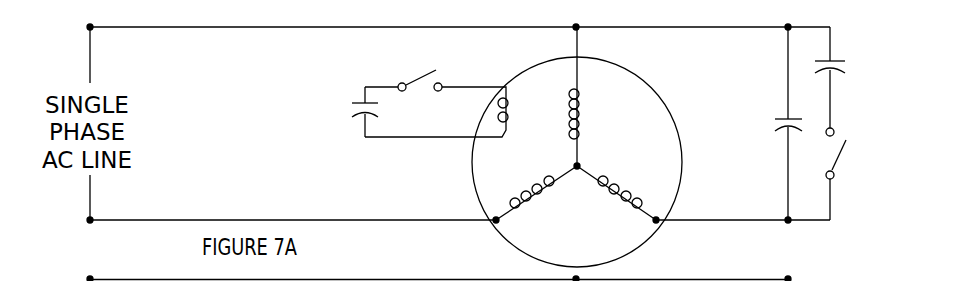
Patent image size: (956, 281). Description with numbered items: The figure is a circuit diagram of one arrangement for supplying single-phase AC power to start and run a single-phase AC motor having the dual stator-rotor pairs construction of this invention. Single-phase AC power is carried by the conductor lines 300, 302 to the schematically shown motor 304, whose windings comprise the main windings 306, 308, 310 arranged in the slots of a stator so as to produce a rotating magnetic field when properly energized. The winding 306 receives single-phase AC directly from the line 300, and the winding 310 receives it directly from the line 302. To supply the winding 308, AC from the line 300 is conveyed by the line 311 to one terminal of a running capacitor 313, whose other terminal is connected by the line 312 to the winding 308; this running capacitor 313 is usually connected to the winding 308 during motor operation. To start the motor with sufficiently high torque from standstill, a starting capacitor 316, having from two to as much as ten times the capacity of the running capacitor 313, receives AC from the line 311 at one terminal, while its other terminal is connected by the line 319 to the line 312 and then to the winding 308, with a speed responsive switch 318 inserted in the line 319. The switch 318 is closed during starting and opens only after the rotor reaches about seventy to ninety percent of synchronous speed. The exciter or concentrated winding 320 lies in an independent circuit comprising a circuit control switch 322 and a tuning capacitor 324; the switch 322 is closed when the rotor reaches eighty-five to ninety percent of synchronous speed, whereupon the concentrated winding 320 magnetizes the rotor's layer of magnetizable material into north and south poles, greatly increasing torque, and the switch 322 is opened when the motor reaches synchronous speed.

The conductor line 300 is at (282, 28).
The conductor line 302 is at (280, 220).
The motor 304 is at (652, 88).
The main winding 306 is at (598, 112).
The main winding 308 is at (630, 183).
The main winding 310 is at (540, 192).
The line 311 is at (754, 28).
The line 312 is at (775, 219).
The running capacitor 313 is at (775, 127).
The starting capacitor 316 is at (867, 52).
The speed responsive switch 318 is at (867, 138).
The line 319 is at (832, 190).
The concentrated winding 320 is at (510, 108).
The circuit control switch 322 is at (422, 72).
The tuning capacitor 324 is at (360, 110).